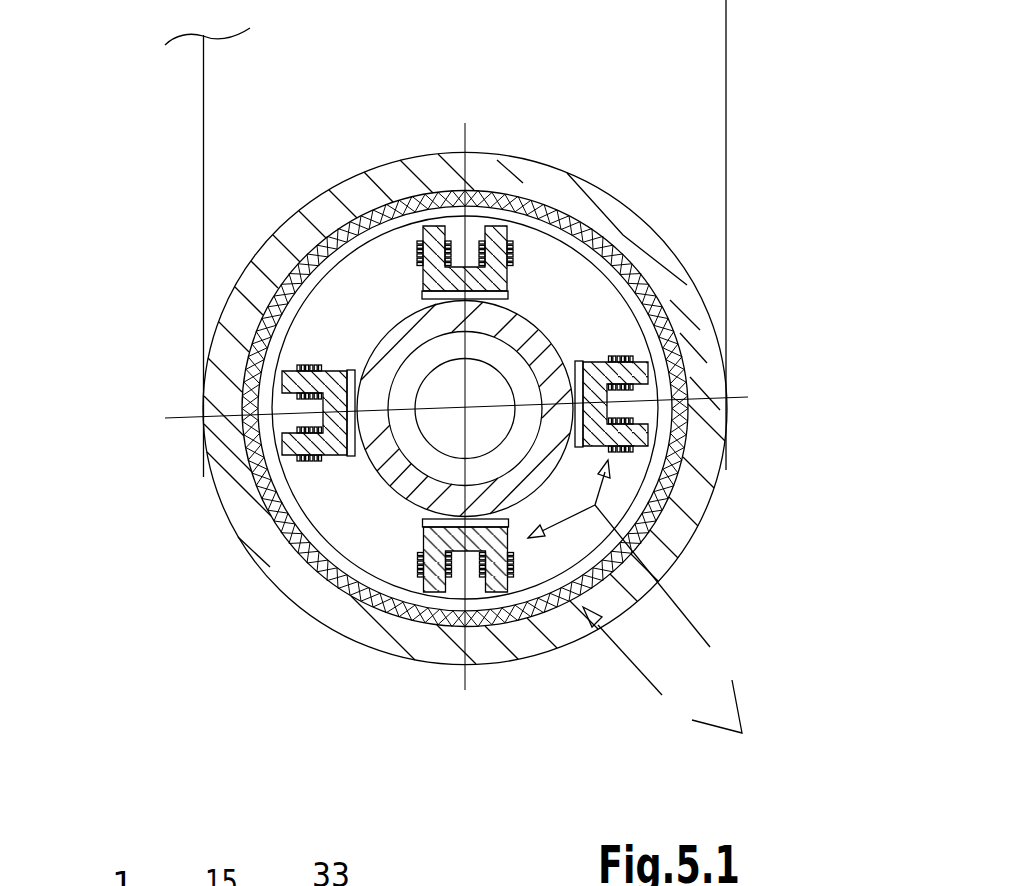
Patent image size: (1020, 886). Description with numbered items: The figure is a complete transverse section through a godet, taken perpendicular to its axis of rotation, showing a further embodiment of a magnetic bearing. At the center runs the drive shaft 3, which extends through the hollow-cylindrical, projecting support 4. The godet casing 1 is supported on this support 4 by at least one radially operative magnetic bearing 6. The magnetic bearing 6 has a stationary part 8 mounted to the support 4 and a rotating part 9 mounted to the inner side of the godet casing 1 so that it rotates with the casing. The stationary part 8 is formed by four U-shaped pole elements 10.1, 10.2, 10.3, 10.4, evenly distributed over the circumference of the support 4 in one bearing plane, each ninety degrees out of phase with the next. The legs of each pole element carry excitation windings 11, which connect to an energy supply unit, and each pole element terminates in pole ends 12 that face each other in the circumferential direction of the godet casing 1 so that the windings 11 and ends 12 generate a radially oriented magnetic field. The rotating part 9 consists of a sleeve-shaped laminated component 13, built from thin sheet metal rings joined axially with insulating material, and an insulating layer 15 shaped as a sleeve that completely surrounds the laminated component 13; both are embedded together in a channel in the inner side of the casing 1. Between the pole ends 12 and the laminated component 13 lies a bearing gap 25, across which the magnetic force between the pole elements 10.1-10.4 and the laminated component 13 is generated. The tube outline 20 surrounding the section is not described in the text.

The godet casing 1 is at (660, 257).
The drive shaft 3 is at (445, 433).
The support 4 is at (380, 440).
The magnetic bearing 6 is at (729, 729).
The stationary part 8 is at (635, 571).
The rotating part 9 is at (635, 669).
The pole element 10.1 is at (590, 230).
The pole element 10.2 is at (672, 323).
The pole element 10.3 is at (348, 603).
The pole element 10.4 is at (258, 354).
The excitation winding 11 is at (410, 262).
The pole ends 12 is at (495, 227).
The laminated component 13 is at (540, 635).
The insulating layer 15 is at (512, 275).
The tube 20 is at (203, 177).
The bearing gap 25 is at (690, 378).